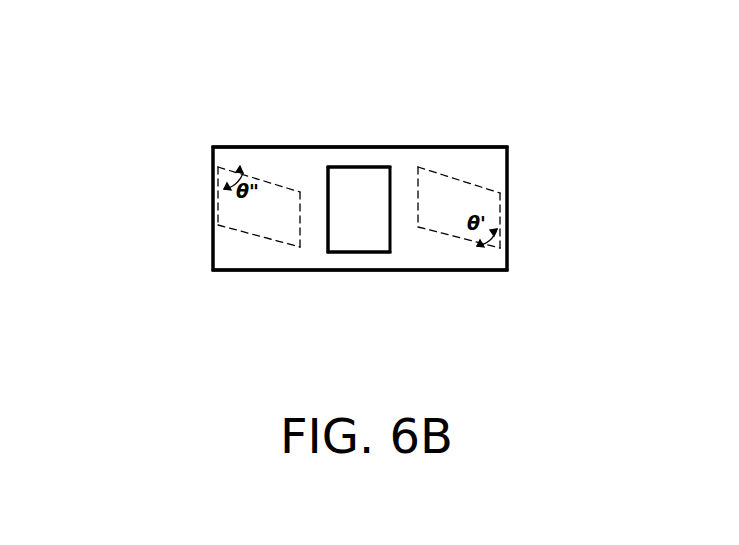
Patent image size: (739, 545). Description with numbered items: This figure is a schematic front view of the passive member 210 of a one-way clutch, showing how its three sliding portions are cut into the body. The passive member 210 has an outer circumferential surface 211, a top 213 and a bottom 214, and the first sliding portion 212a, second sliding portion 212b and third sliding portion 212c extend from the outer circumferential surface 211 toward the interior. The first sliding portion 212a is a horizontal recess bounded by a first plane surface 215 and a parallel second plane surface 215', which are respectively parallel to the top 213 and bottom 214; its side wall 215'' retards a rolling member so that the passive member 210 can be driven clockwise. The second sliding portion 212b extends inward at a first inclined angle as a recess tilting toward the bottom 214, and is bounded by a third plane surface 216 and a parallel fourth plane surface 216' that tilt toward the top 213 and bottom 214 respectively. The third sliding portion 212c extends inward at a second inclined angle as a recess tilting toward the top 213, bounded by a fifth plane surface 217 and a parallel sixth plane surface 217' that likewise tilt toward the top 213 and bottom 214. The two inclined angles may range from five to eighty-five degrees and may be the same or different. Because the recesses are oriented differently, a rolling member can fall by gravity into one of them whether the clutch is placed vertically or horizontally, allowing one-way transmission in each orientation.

The passive member 210 is at (195, 117).
The outer circumferential surface 211 is at (213, 230).
The first sliding portion 212a is at (373, 203).
The second sliding portion 212b is at (487, 200).
The third sliding portion 212c is at (233, 199).
The top 213 is at (483, 148).
The bottom 214 is at (485, 270).
The first plane surface 215 is at (359, 153).
The second plane surface 215' is at (363, 311).
The side wall 215'' is at (300, 256).
The third plane surface 216 is at (537, 168).
The fourth plane surface 216' is at (540, 252).
The fifth plane surface 217 is at (181, 167).
The sixth plane surface 217' is at (179, 250).